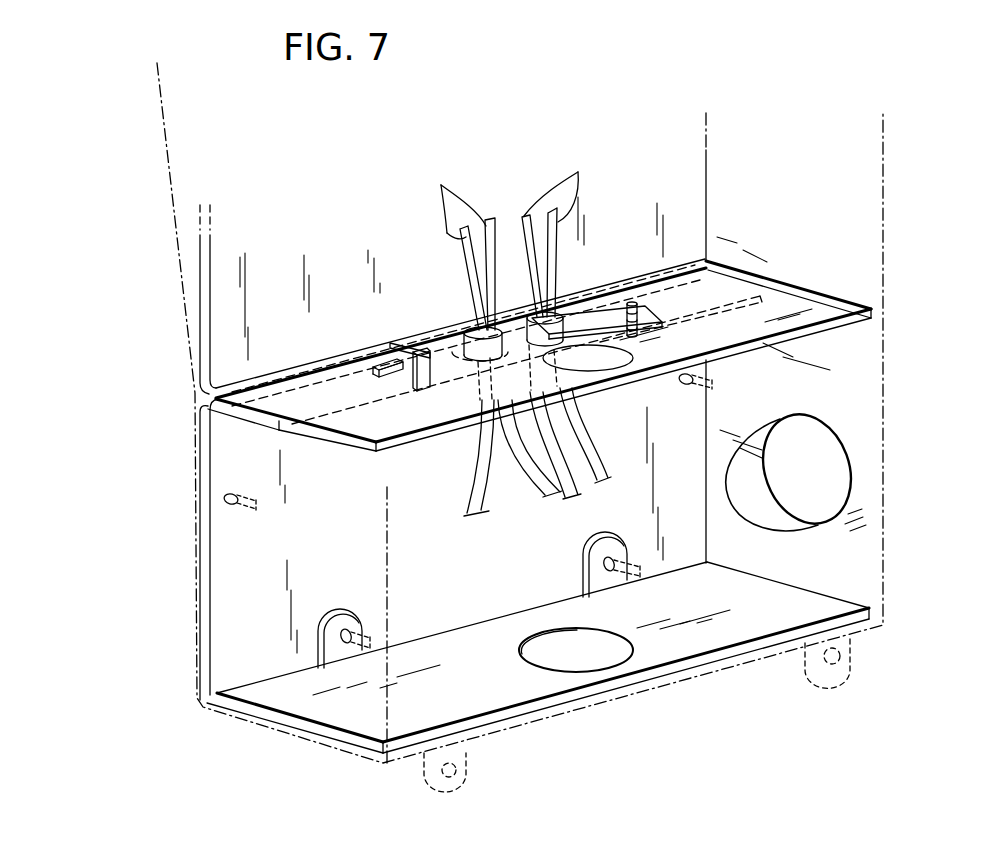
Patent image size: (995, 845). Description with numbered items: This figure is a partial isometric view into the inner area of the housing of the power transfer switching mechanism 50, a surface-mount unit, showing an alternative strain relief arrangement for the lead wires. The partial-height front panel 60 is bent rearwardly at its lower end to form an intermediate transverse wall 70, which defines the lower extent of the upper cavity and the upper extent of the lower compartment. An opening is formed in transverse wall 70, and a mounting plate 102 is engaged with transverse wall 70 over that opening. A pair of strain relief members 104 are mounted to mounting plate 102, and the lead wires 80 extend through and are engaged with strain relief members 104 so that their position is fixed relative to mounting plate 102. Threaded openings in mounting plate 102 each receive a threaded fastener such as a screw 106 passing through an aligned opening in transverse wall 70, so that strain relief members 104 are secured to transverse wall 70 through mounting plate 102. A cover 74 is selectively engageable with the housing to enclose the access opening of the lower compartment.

The power transfer switching mechanism 50 is at (128, 536).
The front panel 60 is at (222, 330).
The intermediate transverse wall 70 is at (806, 300).
The cover 74 is at (195, 620).
The lead wires 80 is at (519, 329).
The mounting plate 102 is at (606, 292).
The strain relief members 104 is at (464, 342).
The screw 106 is at (385, 362).